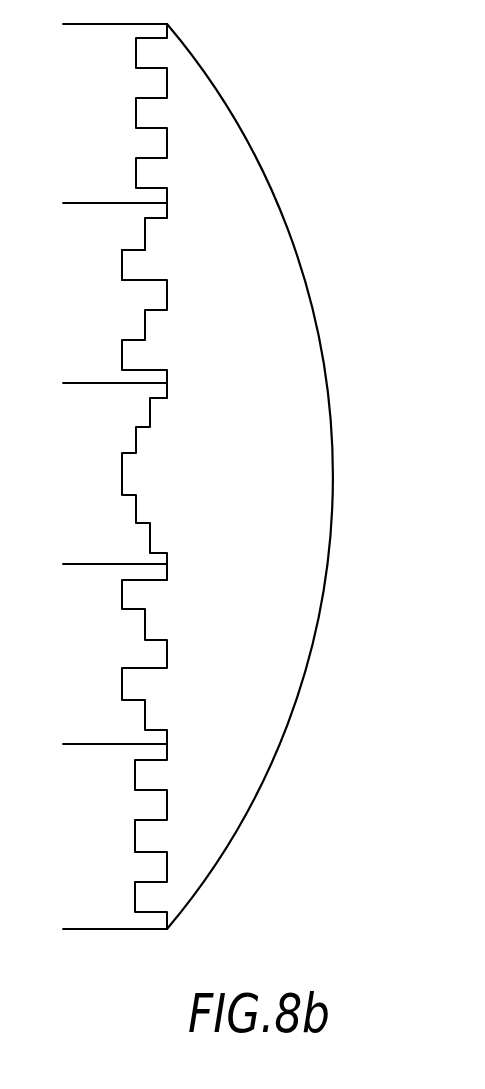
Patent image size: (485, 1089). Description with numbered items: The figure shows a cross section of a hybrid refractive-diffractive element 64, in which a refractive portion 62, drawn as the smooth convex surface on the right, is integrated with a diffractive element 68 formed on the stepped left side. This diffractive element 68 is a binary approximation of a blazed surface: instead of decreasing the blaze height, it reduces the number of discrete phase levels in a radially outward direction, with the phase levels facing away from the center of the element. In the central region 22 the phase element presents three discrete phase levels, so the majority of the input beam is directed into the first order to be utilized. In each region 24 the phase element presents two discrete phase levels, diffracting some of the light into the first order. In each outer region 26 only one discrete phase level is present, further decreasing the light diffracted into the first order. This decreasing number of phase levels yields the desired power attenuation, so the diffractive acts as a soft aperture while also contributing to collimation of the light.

The central region 22 is at (123, 489).
The region 24 is at (123, 481).
The outer region 26 is at (123, 476).
The refractive portion 62 is at (328, 374).
The hybrid refractive-diffractive element 64 is at (326, 254).
The diffractive element 68 is at (122, 250).